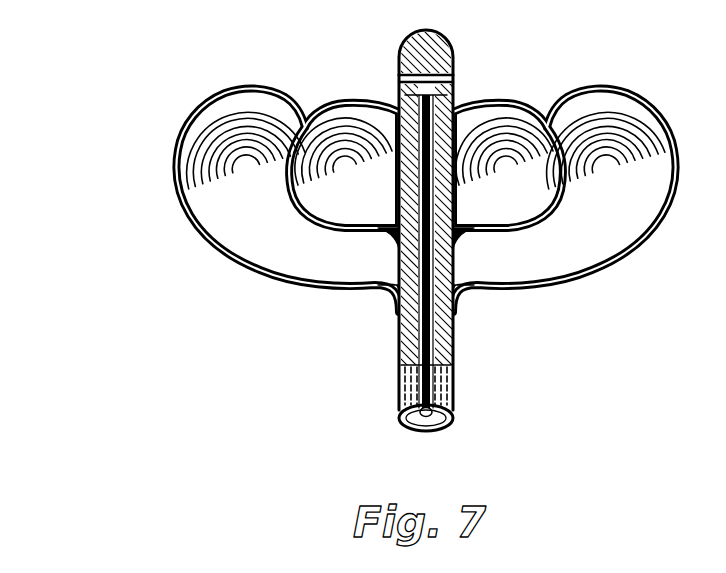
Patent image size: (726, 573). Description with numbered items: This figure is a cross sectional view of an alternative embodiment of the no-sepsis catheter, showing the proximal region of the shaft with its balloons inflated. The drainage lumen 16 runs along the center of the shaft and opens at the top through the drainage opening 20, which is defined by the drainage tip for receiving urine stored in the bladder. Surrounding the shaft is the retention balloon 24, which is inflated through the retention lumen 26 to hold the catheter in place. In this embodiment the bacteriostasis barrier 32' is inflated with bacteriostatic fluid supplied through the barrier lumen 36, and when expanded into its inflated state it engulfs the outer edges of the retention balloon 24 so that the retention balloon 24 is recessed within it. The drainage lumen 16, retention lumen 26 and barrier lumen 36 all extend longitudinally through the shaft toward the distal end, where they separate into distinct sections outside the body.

The drainage opening 20 is at (457, 81).
The retention balloon 24 is at (500, 128).
The bacteriostasis barrier 32' is at (215, 203).
The retention lumen 26 is at (413, 432).
The barrier lumen 36 is at (440, 432).
The drainage lumen 16 is at (428, 434).